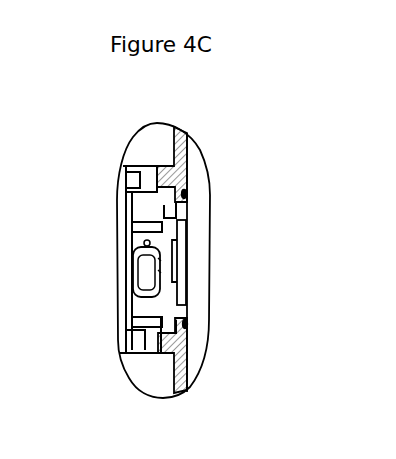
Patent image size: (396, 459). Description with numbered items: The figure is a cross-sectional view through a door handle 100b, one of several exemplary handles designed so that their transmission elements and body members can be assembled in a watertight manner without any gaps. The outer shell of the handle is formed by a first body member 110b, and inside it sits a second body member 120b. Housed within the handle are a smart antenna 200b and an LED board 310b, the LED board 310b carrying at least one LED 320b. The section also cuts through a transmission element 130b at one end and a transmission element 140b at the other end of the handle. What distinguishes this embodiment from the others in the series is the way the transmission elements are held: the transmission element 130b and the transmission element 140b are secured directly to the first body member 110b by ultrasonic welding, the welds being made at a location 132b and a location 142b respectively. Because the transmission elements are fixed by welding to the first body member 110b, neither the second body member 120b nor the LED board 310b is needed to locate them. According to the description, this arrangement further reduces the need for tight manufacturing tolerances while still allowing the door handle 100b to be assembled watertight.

The door handle 100b is at (185, 240).
The first body member 110b is at (203, 203).
The second body member 120b is at (122, 210).
The transmission element 130b is at (185, 134).
The location 132b is at (188, 192).
The transmission element 140b is at (180, 373).
The location 142b is at (189, 323).
The smart antenna 200b is at (156, 280).
The LED board 310b is at (183, 248).
The LED 320b is at (184, 277).